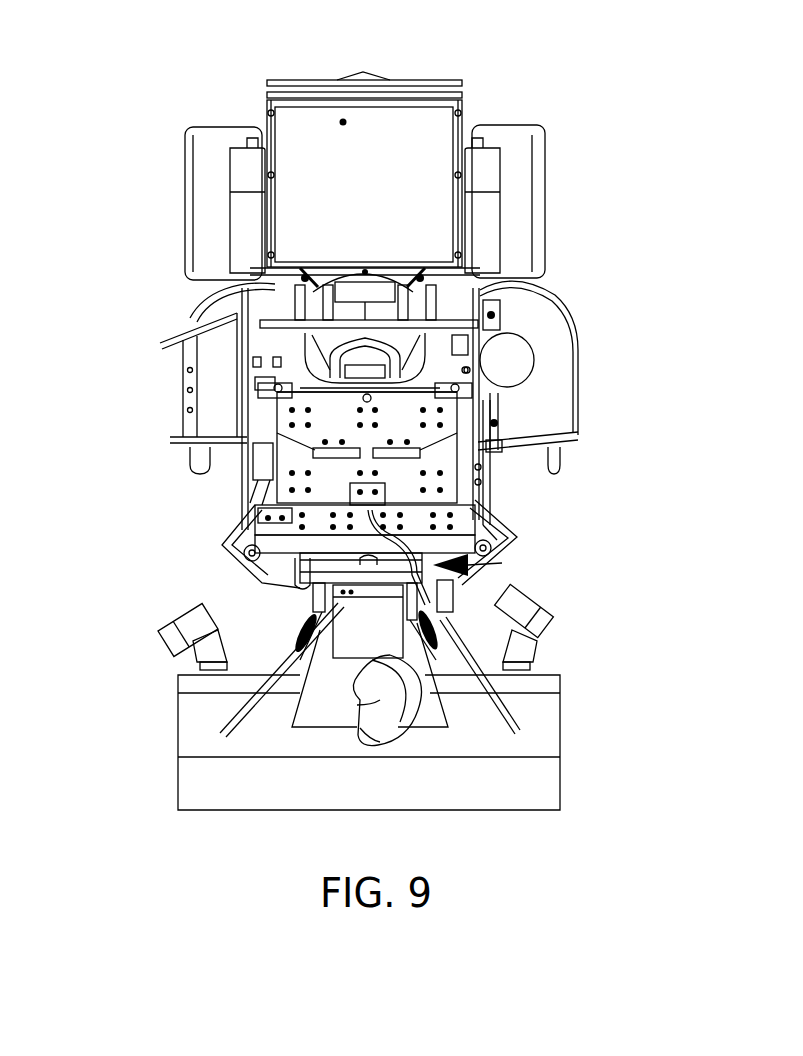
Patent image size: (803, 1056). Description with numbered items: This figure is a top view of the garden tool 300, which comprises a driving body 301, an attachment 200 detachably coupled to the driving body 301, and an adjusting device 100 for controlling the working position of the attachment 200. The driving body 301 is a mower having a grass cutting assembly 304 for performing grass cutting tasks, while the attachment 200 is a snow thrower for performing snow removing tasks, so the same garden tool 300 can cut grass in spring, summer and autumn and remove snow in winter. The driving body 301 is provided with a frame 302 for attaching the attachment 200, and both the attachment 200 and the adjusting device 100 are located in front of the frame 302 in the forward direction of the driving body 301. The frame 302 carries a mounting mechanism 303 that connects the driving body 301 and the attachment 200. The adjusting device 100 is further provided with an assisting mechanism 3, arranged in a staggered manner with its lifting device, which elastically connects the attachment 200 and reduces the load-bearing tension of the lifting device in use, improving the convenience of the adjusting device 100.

The garden tool 300 is at (80, 52).
The driving body 301 is at (290, 213).
The frame 302 is at (483, 480).
The mounting mechanism 303 is at (250, 508).
The grass cutting assembly 304 is at (552, 338).
The adjusting device 100 is at (502, 563).
The assisting mechanism 3 is at (300, 632).
The attachment 200 is at (283, 742).